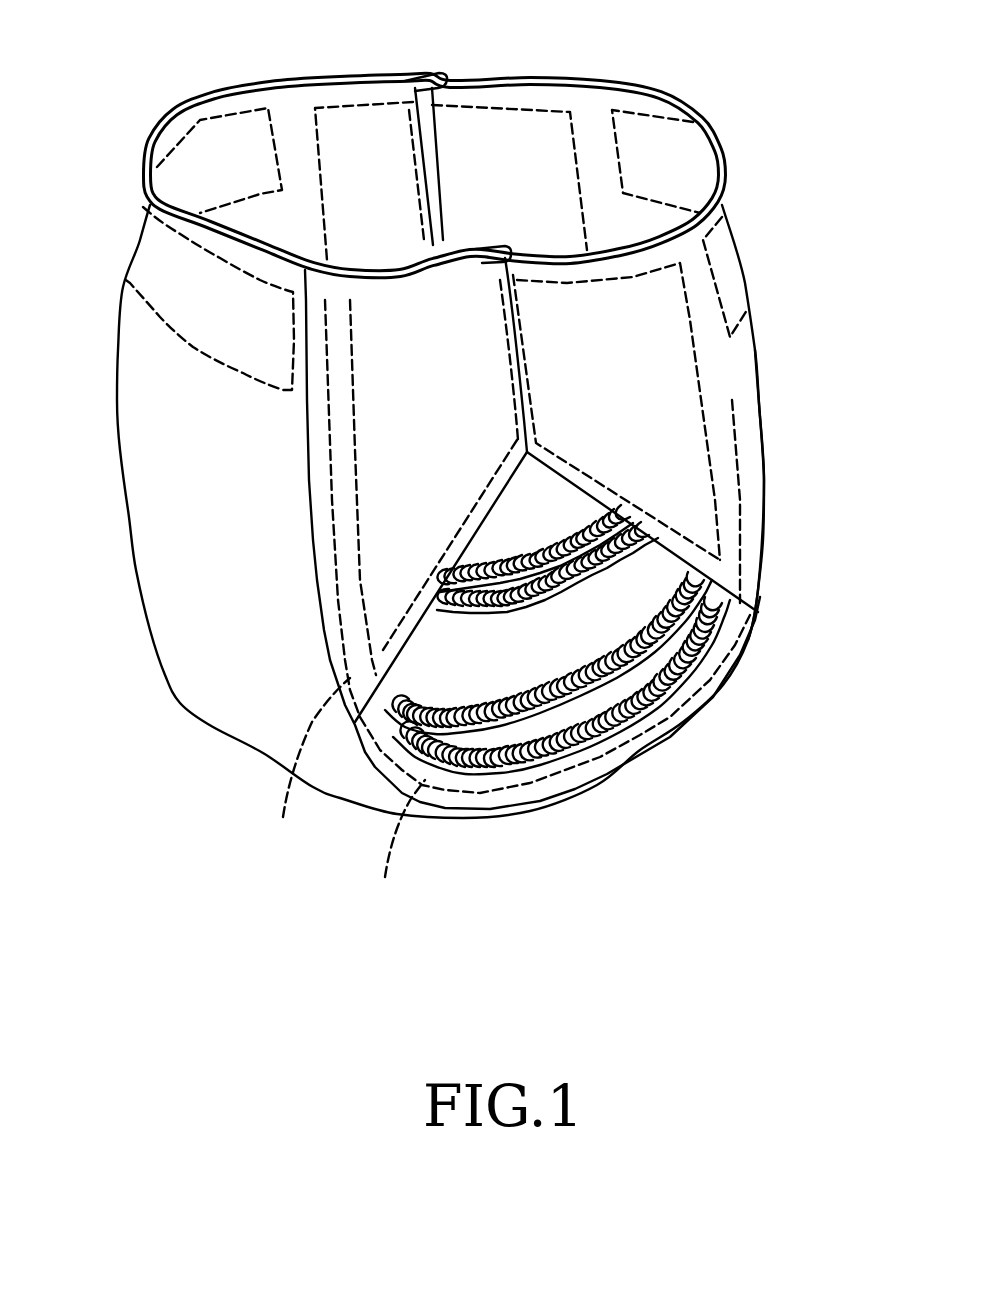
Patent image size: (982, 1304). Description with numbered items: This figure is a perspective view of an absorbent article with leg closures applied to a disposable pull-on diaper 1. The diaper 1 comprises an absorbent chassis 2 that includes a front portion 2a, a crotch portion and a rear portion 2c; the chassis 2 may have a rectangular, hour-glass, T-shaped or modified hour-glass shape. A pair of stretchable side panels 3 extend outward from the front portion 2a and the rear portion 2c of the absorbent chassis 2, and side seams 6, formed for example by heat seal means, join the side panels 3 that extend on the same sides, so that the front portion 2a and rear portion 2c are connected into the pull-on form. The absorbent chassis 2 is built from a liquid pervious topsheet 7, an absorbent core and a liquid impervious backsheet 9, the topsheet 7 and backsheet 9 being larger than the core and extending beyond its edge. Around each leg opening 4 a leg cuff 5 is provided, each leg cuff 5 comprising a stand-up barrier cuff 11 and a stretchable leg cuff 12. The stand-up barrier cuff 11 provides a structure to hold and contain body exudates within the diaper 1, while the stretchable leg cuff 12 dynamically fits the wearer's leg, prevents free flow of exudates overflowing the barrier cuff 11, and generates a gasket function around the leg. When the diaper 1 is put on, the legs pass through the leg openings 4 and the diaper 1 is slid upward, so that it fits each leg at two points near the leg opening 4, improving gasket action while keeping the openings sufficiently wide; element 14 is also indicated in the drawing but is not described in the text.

The disposable pull-on diaper 1 is at (772, 224).
The absorbent chassis 2 is at (786, 491).
The front portion 2a is at (227, 657).
The rear portion 2c is at (753, 443).
The stretchable side panels 3 is at (430, 453).
The leg openings 4 is at (603, 643).
The leg cuffs 5 is at (528, 797).
The side seams 6 is at (415, 118).
The liquid pervious topsheet 7 is at (717, 603).
The liquid impervious backsheet 9 is at (767, 543).
The stand-up barrier cuff 11 is at (647, 640).
The stretchable leg cuff 12 is at (602, 740).
The leg elastic line 14 is at (346, 798).